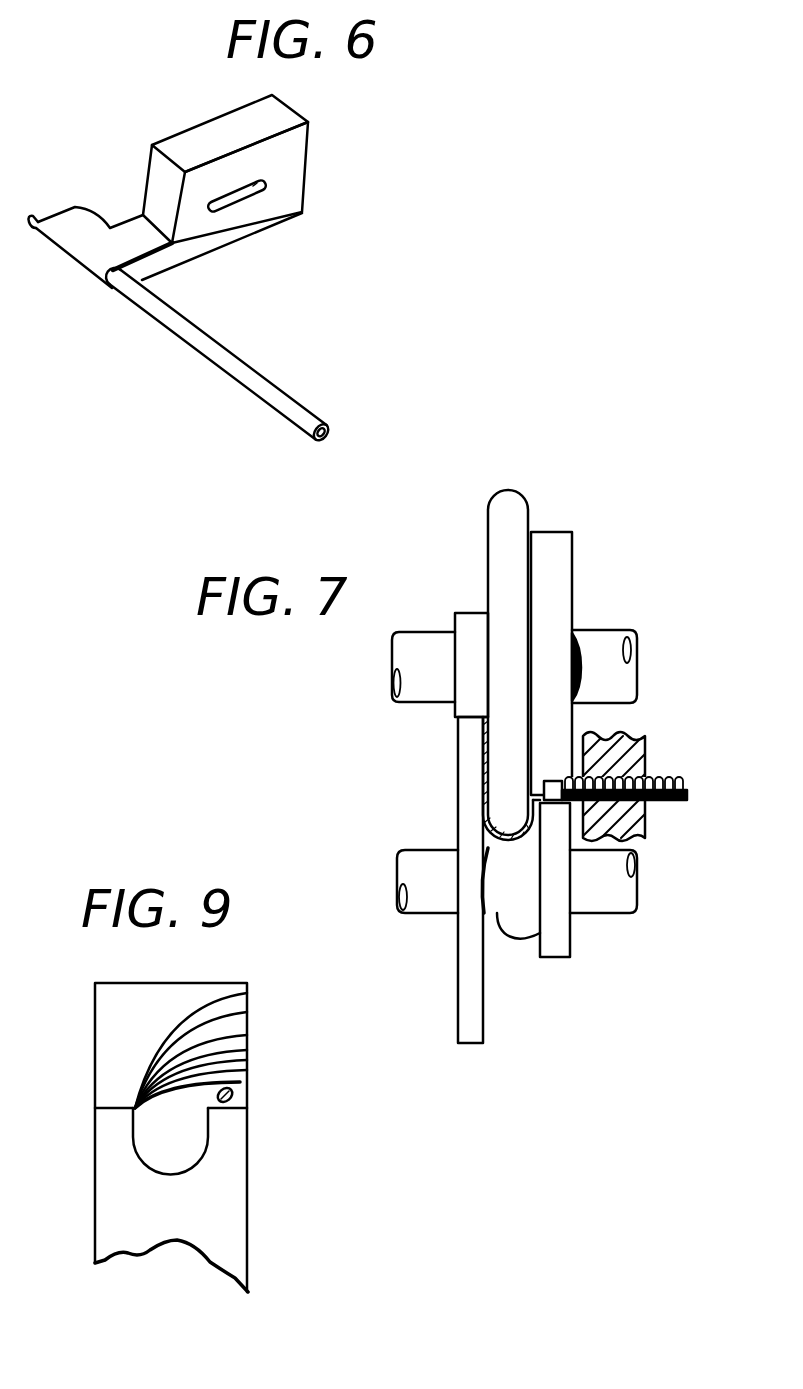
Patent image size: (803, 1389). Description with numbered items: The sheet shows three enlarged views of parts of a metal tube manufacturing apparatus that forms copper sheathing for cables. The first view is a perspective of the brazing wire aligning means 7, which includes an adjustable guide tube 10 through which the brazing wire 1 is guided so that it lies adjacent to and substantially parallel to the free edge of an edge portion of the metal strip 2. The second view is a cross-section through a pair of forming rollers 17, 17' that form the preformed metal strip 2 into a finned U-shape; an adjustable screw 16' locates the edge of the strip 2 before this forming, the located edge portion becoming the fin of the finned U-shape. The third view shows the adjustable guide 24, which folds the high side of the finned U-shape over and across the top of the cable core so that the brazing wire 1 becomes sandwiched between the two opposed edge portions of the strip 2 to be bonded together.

In FIG. 6, the brazing wire guide means 7 is at (298, 167).
In FIG. 6, the adjustable guide tube 10 is at (287, 403).
In FIG. 7, the forming roller 17 is at (550, 630).
In FIG. 7, the forming roller 17' is at (414, 880).
In FIG. 7, the metal strip 2 is at (485, 746).
In FIG. 7, the adjustable screw 16' is at (644, 749).
In FIG. 9, the brazing wire 1 is at (235, 1098).
In FIG. 9, the adjustable guide 24 is at (233, 1173).